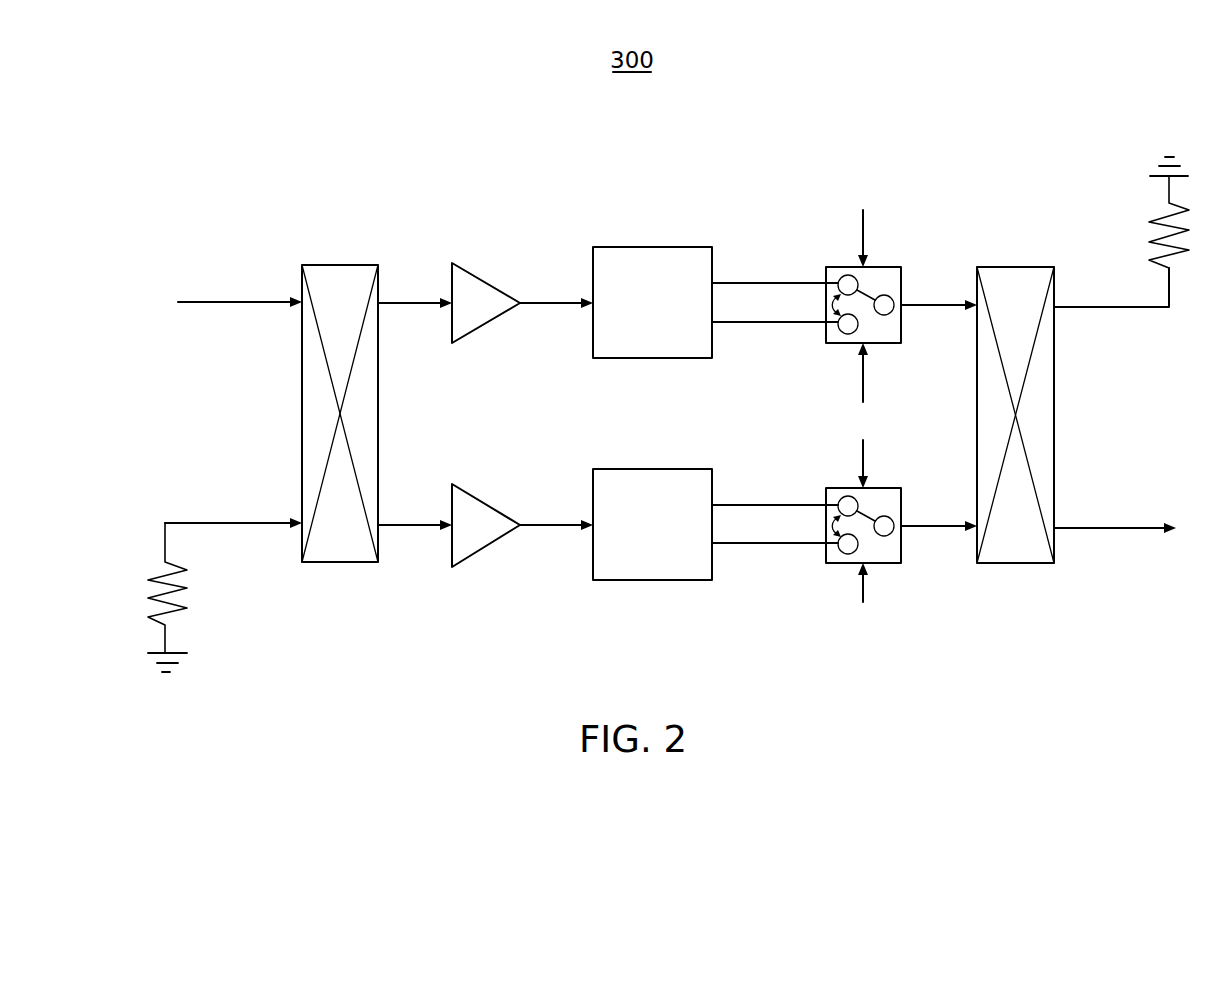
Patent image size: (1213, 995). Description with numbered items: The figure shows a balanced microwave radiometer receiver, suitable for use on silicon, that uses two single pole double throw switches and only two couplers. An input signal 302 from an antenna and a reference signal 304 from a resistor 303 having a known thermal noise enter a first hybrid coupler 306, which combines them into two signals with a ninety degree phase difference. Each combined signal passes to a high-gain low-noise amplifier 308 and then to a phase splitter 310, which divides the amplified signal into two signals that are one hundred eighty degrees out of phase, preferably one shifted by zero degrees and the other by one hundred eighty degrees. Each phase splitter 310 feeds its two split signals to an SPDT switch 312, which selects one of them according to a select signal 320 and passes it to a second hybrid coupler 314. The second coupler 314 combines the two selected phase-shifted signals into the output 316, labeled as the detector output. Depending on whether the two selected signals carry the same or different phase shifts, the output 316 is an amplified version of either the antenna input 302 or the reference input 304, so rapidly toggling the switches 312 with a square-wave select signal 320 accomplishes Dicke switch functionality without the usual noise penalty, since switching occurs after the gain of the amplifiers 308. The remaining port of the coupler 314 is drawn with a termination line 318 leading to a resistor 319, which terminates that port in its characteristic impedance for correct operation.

The input signal 302 is at (258, 303).
The resistor 303 is at (205, 590).
The reference signal 304 is at (245, 524).
The first 3 dB, 90° hybrid coupler 306 is at (323, 547).
The high-gain low-noise amplifier 308 is at (460, 314).
The phase splitter 310 is at (635, 352).
The SPDT switch 312 is at (863, 415).
The second 3 dB, 90° hybrid coupler 314 is at (1001, 547).
The output 316 is at (1112, 530).
The termination line 318 is at (1100, 308).
The resistor 319 is at (1130, 208).
The select signal 320 is at (850, 226).